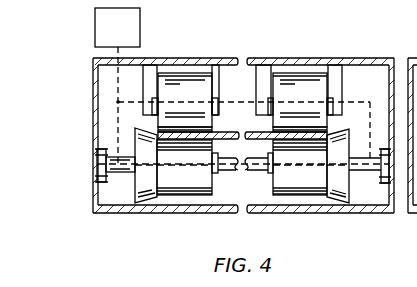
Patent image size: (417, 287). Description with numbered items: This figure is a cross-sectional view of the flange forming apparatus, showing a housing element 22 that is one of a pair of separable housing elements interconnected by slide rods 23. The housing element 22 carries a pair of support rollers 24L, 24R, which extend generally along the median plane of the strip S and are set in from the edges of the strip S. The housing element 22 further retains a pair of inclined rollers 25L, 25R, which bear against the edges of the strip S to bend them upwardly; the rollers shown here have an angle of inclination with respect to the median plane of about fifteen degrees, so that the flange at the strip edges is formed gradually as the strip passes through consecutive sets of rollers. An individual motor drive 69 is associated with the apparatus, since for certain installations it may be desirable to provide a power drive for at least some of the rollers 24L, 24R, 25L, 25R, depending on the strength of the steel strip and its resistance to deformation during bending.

The housing element 22 is at (93, 105).
The individual motor drive 69 is at (129, 39).
The strip S is at (244, 132).
The left support roller 24L is at (187, 76).
The right support roller 24R is at (317, 74).
The left inclined roller 25L is at (145, 201).
The right inclined roller 25R is at (342, 200).
The slide rod 23 is at (247, 173).